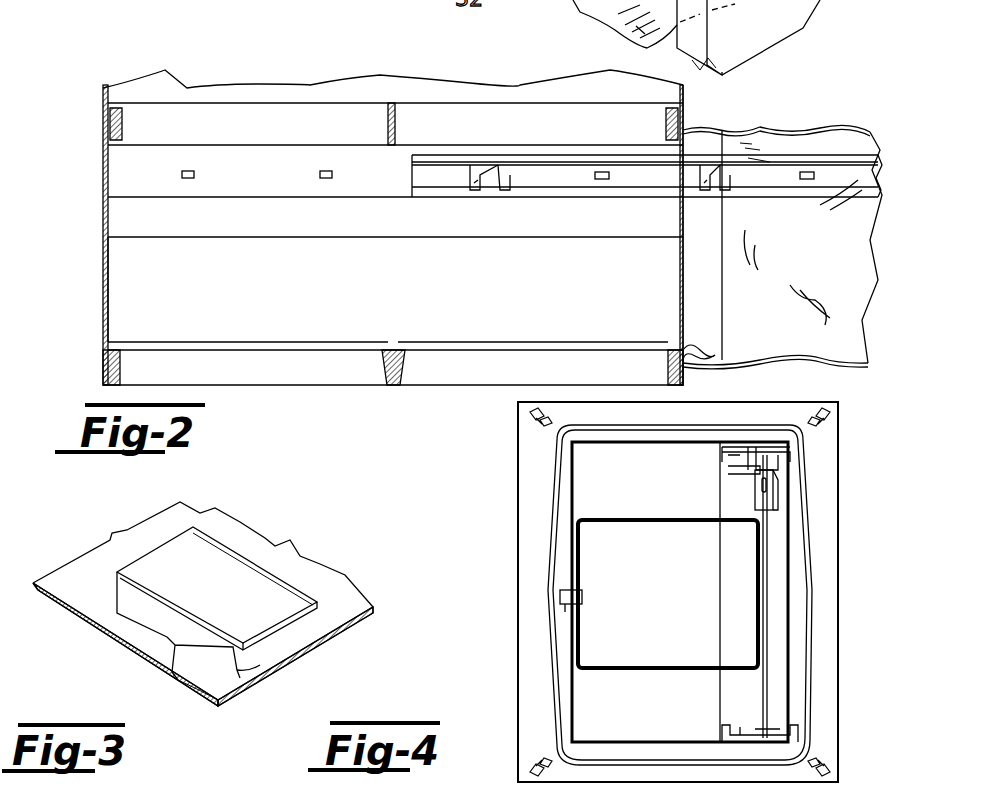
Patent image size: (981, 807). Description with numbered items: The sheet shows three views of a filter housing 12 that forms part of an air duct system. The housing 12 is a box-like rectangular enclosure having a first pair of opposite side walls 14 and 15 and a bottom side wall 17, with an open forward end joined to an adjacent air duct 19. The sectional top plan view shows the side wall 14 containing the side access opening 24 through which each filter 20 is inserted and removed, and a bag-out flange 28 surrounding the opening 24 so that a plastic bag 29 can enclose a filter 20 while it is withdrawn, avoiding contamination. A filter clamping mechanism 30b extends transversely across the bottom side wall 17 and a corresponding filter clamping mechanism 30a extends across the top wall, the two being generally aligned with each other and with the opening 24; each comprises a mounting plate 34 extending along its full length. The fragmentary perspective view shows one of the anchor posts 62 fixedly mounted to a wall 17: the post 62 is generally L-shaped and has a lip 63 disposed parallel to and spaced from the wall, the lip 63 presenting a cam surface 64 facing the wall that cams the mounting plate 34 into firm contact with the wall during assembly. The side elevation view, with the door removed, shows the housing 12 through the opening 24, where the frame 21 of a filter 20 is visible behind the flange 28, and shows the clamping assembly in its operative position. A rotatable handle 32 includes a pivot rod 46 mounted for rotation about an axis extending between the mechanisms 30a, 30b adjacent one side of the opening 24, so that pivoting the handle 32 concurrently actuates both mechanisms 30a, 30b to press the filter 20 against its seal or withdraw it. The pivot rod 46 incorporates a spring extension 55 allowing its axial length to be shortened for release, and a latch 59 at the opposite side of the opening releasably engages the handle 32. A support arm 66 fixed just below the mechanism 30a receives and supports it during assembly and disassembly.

In FIG. 2, the housing 12 is at (100, 238).
In FIG. 4, the housing 12 is at (512, 682).
In FIG. 2, the side wall 14 is at (683, 378).
In FIG. 4, the side wall 14 is at (530, 452).
In FIG. 2, the side wall 15 is at (103, 308).
In FIG. 2, the side wall 17 is at (300, 308).
In FIG. 3, the side wall 17 is at (75, 593).
In FIG. 2, the air duct 19 is at (278, 95).
In FIG. 4, the filter 20 is at (618, 547).
In FIG. 4, the filter frame 21 is at (658, 494).
In FIG. 2, the side access opening 24 is at (683, 352).
In FIG. 4, the side access opening 24 is at (572, 492).
In FIG. 2, the bag-out flange 28 is at (710, 360).
In FIG. 4, the bag-out flange 28 is at (556, 572).
In FIG. 2, the plastic bag 29 is at (832, 130).
In FIG. 4, the filter clamping mechanism 30a is at (748, 442).
In FIG. 2, the filter clamping mechanism 30b is at (572, 198).
In FIG. 4, the filter clamping mechanism 30b is at (741, 725).
In FIG. 4, the rotatable handle 32 is at (568, 636).
In FIG. 2, the mounting plate 34 is at (540, 178).
In FIG. 4, the pivot rod 46 is at (765, 598).
In FIG. 4, the spring extension 55 is at (786, 518).
In FIG. 4, the latch 59 is at (560, 598).
In FIG. 3, the post 62 is at (228, 538).
In FIG. 3, the lip 63 is at (172, 676).
In FIG. 3, the cam surface 64 is at (240, 682).
In FIG. 4, the support arm 66 is at (778, 488).